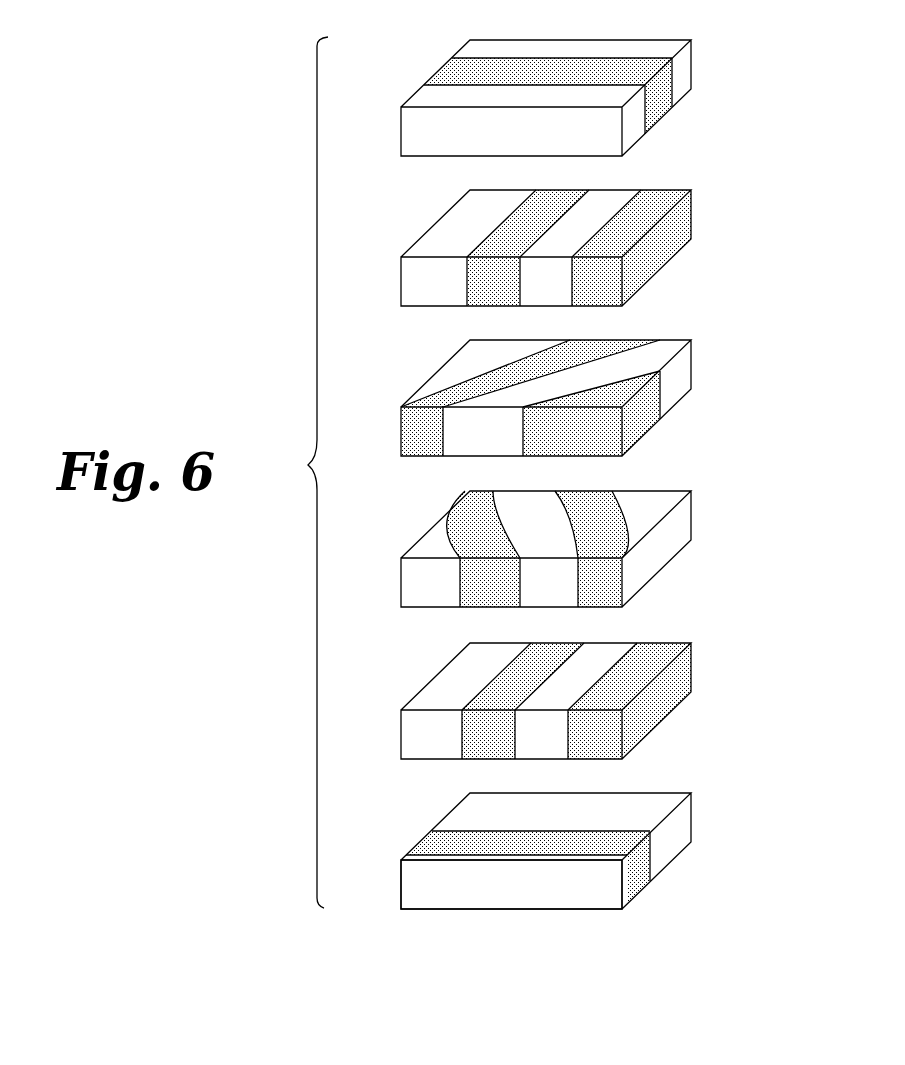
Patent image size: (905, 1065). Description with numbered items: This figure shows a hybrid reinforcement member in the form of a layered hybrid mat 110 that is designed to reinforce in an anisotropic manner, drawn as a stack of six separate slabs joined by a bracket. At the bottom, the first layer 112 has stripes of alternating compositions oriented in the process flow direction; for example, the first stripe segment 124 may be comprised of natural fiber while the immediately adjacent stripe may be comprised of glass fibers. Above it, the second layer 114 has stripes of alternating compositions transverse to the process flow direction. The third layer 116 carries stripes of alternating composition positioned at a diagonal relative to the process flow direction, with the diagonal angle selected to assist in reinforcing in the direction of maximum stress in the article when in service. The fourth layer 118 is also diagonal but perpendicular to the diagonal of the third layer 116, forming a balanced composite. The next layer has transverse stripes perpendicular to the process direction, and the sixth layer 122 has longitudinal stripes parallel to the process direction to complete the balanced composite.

The layered hybrid mat 110 is at (297, 472).
The first layer 112 is at (556, 867).
The second layer 114 is at (688, 680).
The third layer 116 is at (688, 527).
The fourth layer 118 is at (688, 376).
The sixth layer 122 is at (688, 72).
The first stripe segment 124 is at (428, 862).